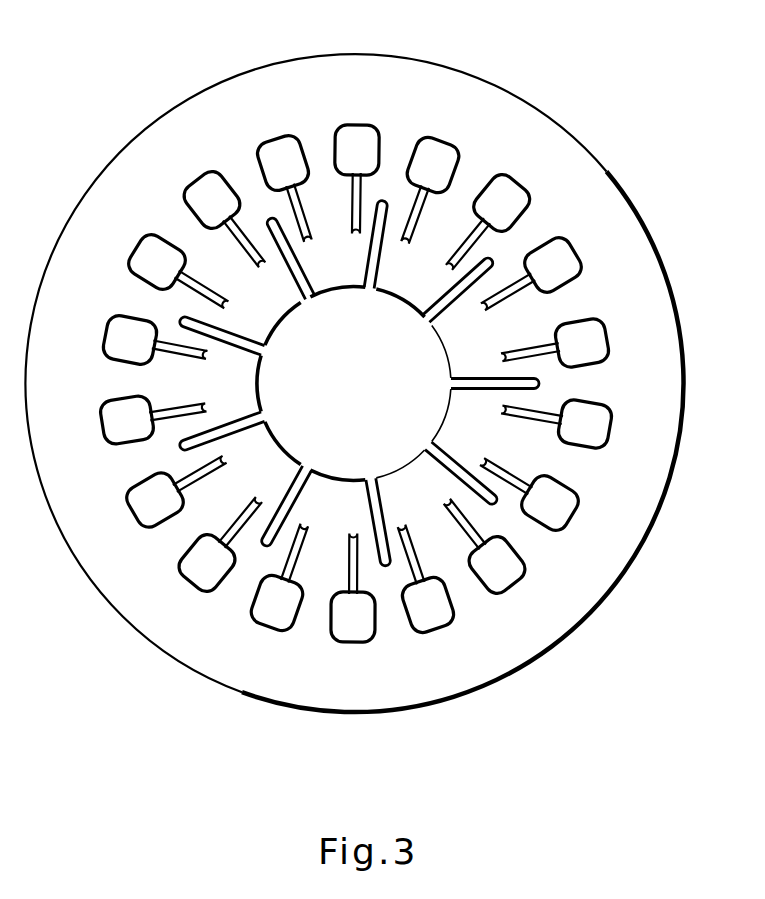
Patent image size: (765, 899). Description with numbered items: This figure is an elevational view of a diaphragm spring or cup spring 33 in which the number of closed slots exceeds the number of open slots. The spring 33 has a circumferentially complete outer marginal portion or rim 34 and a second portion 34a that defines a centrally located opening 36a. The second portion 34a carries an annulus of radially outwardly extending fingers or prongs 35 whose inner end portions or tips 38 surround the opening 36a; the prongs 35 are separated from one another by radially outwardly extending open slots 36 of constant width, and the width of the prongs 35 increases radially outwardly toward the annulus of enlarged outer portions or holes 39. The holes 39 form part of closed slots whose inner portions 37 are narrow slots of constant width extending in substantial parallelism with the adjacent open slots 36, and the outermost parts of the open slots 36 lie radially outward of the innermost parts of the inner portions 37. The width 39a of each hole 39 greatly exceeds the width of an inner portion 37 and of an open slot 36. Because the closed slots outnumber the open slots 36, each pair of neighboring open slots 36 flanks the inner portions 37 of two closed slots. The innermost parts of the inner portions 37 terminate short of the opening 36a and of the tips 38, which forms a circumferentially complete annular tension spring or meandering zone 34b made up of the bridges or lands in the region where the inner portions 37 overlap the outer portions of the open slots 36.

The diaphragm spring 33 is at (355, 361).
The outer marginal portion 34 is at (355, 71).
The second portion 34a is at (534, 458).
The annular tension spring 34b is at (215, 313).
The prongs 35 is at (457, 329).
The open slots 36 is at (423, 440).
The opening 36a is at (353, 423).
The inner portions of closed slots 37 is at (557, 333).
The tips 38 is at (354, 380).
The holes 39 is at (517, 195).
The width of hole 39a is at (468, 636).